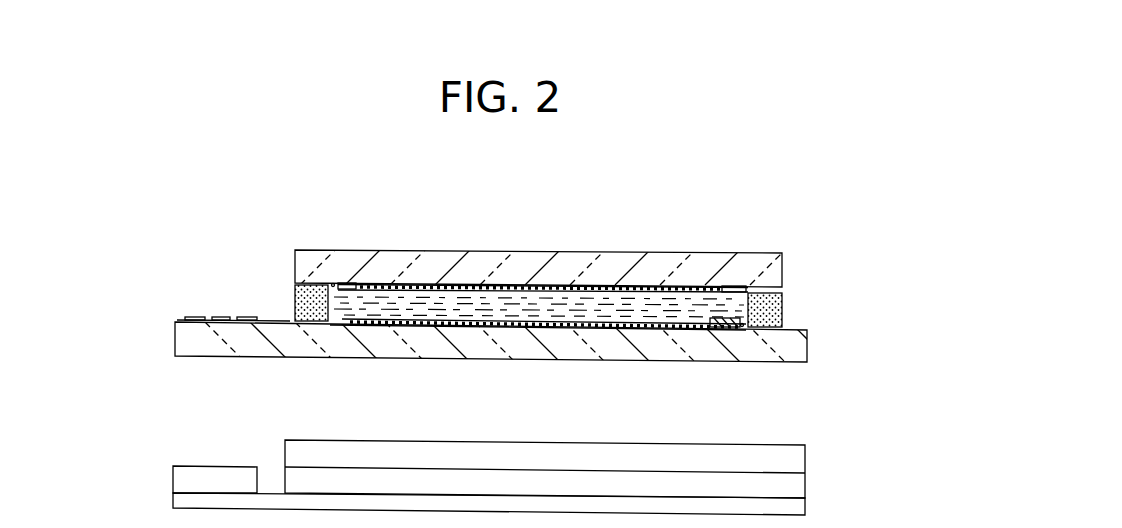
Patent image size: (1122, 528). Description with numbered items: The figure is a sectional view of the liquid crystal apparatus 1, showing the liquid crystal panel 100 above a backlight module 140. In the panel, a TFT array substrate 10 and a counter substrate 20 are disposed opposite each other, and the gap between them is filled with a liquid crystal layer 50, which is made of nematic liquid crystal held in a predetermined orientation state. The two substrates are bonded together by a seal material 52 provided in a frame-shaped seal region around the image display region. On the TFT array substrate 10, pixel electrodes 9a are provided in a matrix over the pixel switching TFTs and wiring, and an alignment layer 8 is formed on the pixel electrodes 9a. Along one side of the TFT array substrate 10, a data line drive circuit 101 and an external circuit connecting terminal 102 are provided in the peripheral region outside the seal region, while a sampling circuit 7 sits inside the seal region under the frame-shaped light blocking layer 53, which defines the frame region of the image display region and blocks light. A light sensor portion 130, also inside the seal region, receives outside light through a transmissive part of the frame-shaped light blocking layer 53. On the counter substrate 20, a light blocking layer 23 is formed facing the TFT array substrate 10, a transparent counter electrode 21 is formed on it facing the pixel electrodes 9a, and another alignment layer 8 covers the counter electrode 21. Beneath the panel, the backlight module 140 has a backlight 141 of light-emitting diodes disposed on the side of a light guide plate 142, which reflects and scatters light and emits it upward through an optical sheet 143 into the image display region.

The liquid crystal apparatus 1 is at (609, 138).
The sampling circuit 7 is at (350, 326).
The alignment layer 8 is at (333, 281).
The pixel electrodes 9a is at (380, 328).
The TFT array substrate 10 is at (573, 350).
The counter substrate 20 is at (448, 268).
The counter electrode 21 is at (641, 286).
The light blocking layer 23 is at (565, 284).
The liquid crystal layer 50 is at (481, 308).
The seal material 52 is at (295, 290).
The frame-shaped light blocking layer 53 is at (350, 283).
The liquid crystal panel 100 is at (149, 248).
The data line drive circuit 101 is at (228, 317).
The external circuit connecting terminal 102 is at (199, 317).
The light sensor portion 130 is at (736, 323).
The backlight module 140 is at (148, 433).
The backlight 141 is at (216, 469).
The light guide plate 142 is at (797, 490).
The optical sheet 143 is at (797, 463).